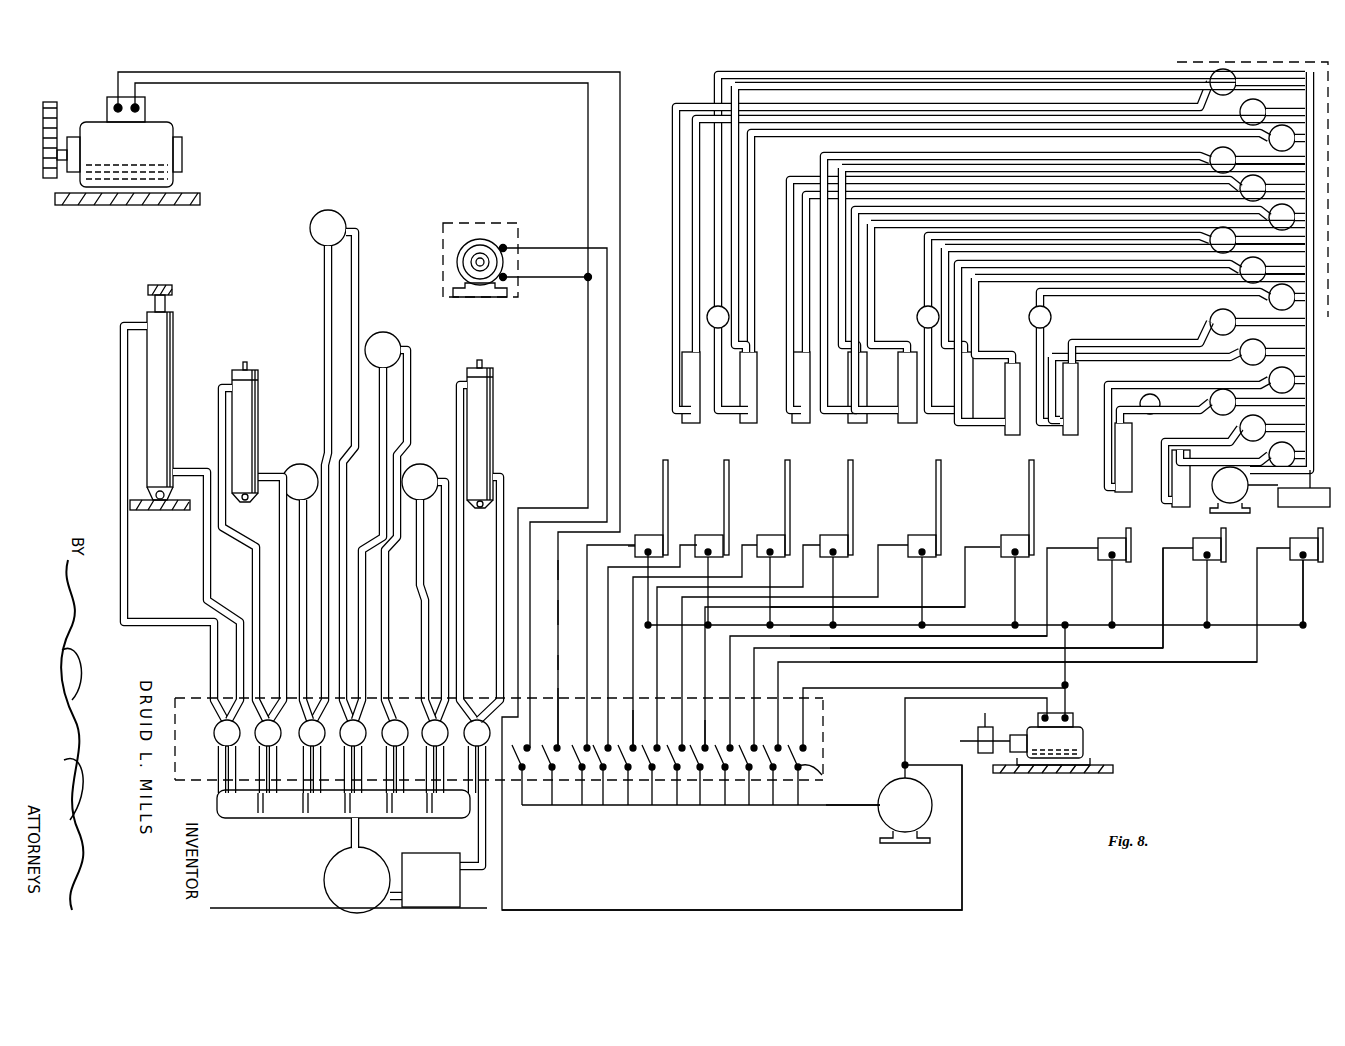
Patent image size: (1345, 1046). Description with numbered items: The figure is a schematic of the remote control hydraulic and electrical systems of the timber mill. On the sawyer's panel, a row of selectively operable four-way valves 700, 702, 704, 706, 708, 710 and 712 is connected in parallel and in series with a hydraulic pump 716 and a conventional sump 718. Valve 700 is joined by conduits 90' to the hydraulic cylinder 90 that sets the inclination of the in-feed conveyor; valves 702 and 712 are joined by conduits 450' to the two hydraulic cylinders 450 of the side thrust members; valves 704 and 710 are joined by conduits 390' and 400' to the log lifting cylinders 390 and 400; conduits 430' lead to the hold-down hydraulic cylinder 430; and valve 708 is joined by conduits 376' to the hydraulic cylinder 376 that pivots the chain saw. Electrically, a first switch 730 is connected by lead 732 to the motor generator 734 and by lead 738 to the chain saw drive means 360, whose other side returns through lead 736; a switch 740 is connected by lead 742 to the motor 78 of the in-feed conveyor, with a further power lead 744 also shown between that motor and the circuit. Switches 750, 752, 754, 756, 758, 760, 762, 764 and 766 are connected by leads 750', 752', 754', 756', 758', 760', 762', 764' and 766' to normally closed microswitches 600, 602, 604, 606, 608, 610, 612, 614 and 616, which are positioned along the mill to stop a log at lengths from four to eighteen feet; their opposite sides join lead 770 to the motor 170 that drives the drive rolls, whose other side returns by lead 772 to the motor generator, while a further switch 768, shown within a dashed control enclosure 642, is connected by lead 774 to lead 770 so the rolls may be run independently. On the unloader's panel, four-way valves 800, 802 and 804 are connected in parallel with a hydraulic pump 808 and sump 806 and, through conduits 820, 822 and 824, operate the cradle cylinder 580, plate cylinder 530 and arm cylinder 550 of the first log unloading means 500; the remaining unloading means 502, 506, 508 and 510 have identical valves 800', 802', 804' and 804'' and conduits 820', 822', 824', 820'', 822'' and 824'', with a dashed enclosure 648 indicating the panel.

The motor 78 is at (163, 140).
The lead 742 is at (428, 72).
The power lead 744 is at (428, 86).
The drive means of the chain saw 360 is at (480, 230).
The lead 738 is at (552, 248).
The lead 736 is at (548, 282).
The hydraulic cylinder 430 is at (305, 223).
The conduits 430' is at (311, 476).
The hydraulic cylinder 376 is at (378, 512).
The conduits 376' is at (415, 535).
The hydraulic cylinder 390 is at (296, 565).
The conduits 390' is at (276, 580).
The hydraulic cylinder 400 is at (423, 575).
The conduits 400' is at (459, 610).
The hydraulic cylinder 90 is at (166, 397).
The conduits 90' is at (182, 523).
The hydraulic cylinders 450 is at (378, 419).
The conduits 450' is at (357, 552).
The four-way valve 700 is at (214, 732).
The four-way valve 702 is at (236, 704).
The four-way valve 704 is at (264, 700).
The four-way valve 706 is at (316, 704).
The four-way valve 708 is at (348, 700).
The four-way valve 710 is at (398, 704).
The four-way valve 712 is at (432, 700).
The hydraulic pump 716 is at (326, 876).
The sump 718 is at (432, 853).
The control box 642 is at (818, 760).
The switch 768 is at (822, 775).
The electrically operable switch 730 is at (528, 790).
The switch 740 is at (560, 800).
The switch 750 is at (603, 689).
The switch 752 is at (645, 699).
The switch 754 is at (687, 689).
The switch 756 is at (731, 699).
The switch 758 is at (787, 689).
The switch 760 is at (845, 703).
The switch 762 is at (906, 691).
The switch 764 is at (966, 701).
The switch 766 is at (1026, 691).
The lead 774 is at (850, 688).
The lead 732 is at (826, 808).
The motor generator 734 is at (886, 828).
The lead 772 is at (910, 748).
The motor 170 is at (1080, 727).
The microswitch 600 is at (641, 533).
The microswitch 602 is at (700, 533).
The microswitch 604 is at (760, 533).
The microswitch 606 is at (824, 533).
The microswitch 608 is at (914, 533).
The microswitch 610 is at (1006, 533).
The microswitch 612 is at (1100, 538).
The microswitch 614 is at (1205, 565).
The microswitch 616 is at (1300, 565).
The lead 750' is at (571, 592).
The lead 752' is at (579, 652).
The lead 754' is at (590, 708).
The lead 756' is at (636, 710).
The lead 758' is at (714, 715).
The lead 760' is at (840, 615).
The lead 762' is at (888, 643).
The lead 764' is at (966, 655).
The lead 766' is at (1017, 673).
The lead 770 is at (1170, 640).
The log unloading means 500 is at (672, 358).
The hydraulic cylinder 550 is at (690, 385).
The hydraulic cylinder 580 is at (716, 326).
The hydraulic cylinder 530 is at (752, 352).
The tank unit 502 is at (835, 408).
The tank unit 506 is at (946, 405).
The tank unit 508 is at (1032, 408).
The tank unit 510 is at (1105, 490).
The conduits 820 is at (990, 231).
The conduits 824 is at (1047, 248).
The conduits 822 is at (1064, 264).
The conduits 820' is at (1080, 282).
The conduits 824' is at (1111, 329).
The conduits 822' is at (1131, 345).
The conduits 820'' is at (1105, 300).
The conduits 824'' is at (1108, 330).
The conduits 822'' is at (1158, 385).
The control enclosure 648 is at (1228, 184).
The four-way valve 800 is at (1195, 124).
The four-way valve 800' is at (1197, 322).
The four-way valve 804 is at (1210, 112).
The four-way valve 804' is at (1263, 259).
The four-way valve 804'' is at (1259, 417).
The four-way valve 802 is at (1251, 135).
The four-way valve 802' is at (1253, 336).
The hydraulic pump 808 is at (1214, 498).
The sump 806 is at (1290, 506).